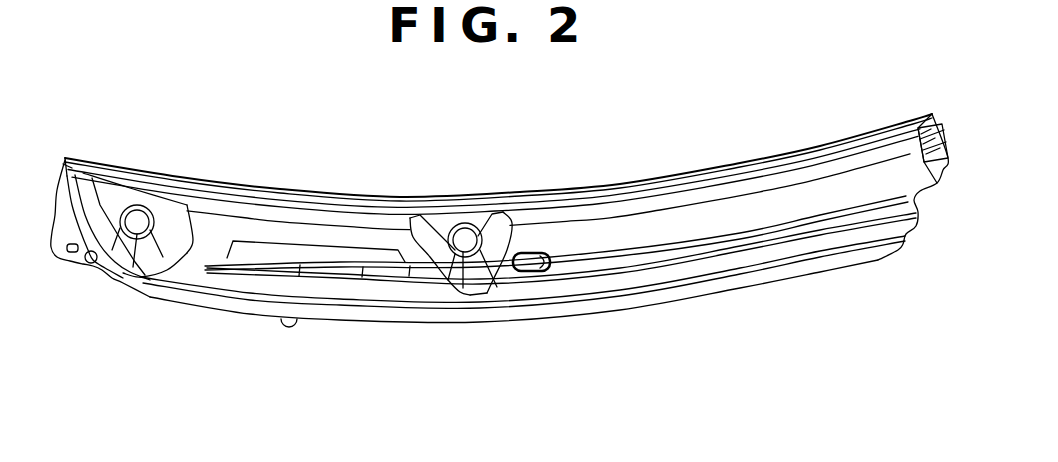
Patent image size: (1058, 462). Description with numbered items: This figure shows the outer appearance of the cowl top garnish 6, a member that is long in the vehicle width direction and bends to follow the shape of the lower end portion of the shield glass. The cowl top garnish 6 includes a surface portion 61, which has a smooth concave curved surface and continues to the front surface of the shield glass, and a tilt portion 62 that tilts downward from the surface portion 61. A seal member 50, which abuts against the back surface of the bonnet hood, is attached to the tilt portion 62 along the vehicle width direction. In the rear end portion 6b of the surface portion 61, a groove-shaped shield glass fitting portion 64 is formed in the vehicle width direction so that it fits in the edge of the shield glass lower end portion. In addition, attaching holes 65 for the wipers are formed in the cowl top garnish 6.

The cowl top garnish 6 is at (500, 243).
The rear end portion 6b is at (590, 183).
The shield glass fitting portion 64 is at (498, 166).
The seal member 50 is at (575, 300).
The surface portion 61 is at (672, 224).
The tilt portion 62 is at (812, 270).
The attaching holes 65 is at (130, 280).